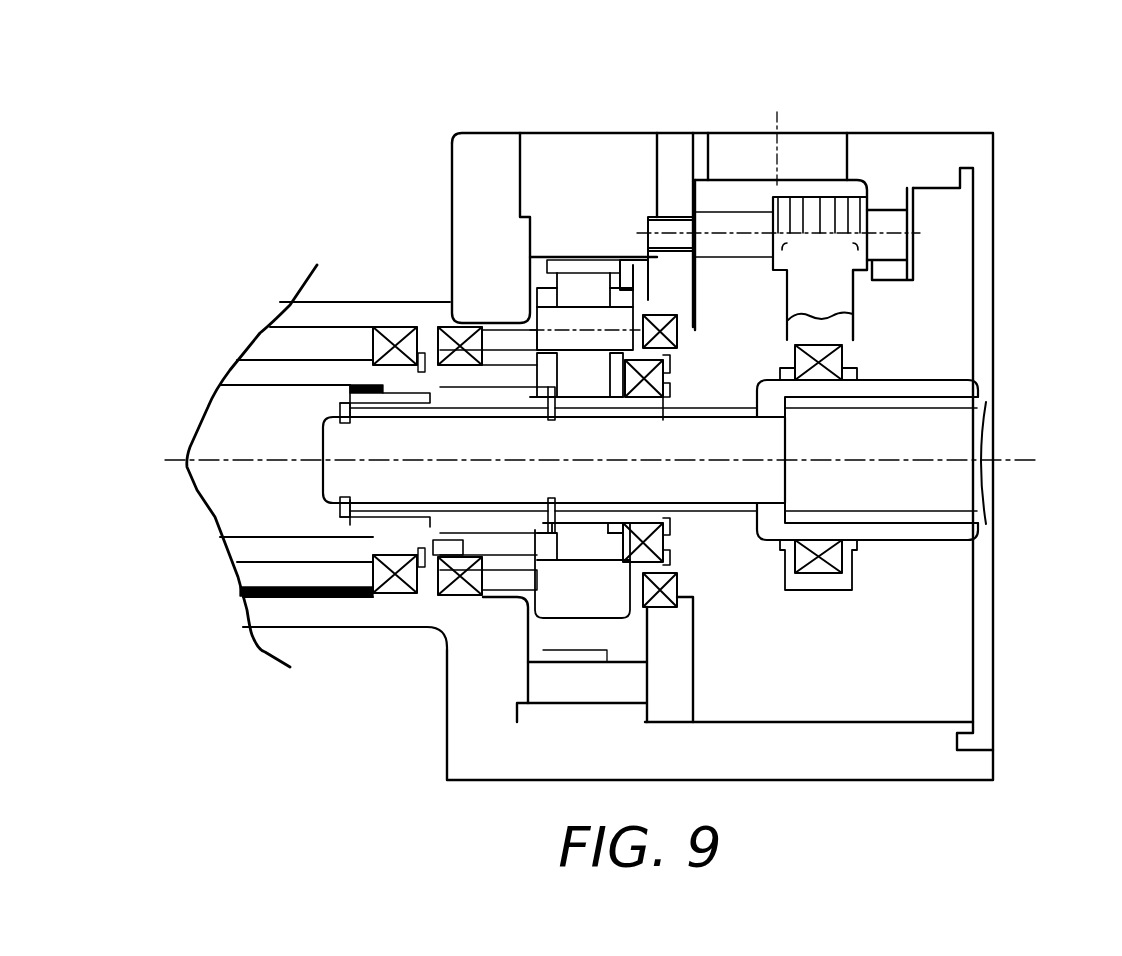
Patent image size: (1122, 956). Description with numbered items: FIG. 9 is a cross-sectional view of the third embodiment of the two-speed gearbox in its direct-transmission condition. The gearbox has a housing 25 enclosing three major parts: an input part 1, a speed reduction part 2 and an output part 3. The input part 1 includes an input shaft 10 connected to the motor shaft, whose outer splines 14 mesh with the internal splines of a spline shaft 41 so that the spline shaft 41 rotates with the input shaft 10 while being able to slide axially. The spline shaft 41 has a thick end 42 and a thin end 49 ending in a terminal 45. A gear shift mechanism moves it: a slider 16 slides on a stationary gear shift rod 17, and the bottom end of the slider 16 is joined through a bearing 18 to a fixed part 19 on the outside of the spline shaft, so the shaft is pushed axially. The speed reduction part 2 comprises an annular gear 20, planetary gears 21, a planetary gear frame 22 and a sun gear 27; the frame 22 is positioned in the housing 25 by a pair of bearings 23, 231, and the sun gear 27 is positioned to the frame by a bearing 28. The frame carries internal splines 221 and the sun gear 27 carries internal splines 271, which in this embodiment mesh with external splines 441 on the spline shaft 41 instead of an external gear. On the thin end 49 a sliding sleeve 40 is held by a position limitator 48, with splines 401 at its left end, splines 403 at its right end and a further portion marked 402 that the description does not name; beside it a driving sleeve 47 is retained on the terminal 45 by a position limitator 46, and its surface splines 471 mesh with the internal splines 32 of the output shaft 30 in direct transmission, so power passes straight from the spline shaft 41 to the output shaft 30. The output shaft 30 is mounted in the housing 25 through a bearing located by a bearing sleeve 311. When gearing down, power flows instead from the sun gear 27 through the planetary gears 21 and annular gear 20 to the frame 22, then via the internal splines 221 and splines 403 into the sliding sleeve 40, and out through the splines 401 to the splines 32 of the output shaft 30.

The input part 1 is at (1005, 292).
The speed reduction part 2 is at (549, 112).
The output part 3 is at (250, 350).
The input shaft 10 is at (968, 493).
The outer splines of the input shaft 14 is at (892, 518).
The slider 16 is at (817, 200).
The stationary gear shift rod 17 is at (728, 215).
The bearing 18 is at (845, 350).
The fixed part 19 is at (860, 372).
The annular gear 20 is at (613, 262).
The planetary gear 21 is at (598, 283).
The planetary gear frame 22 is at (460, 327).
The bearing 23 is at (660, 627).
The housing 25 is at (941, 148).
The sun gear 27 is at (665, 405).
The bearing 28 is at (673, 330).
The output shaft 30 is at (235, 370).
The internal splines of the output shaft 32 is at (350, 385).
The sliding sleeve 40 is at (420, 612).
The spline shaft 41 is at (957, 366).
The thick end 42 is at (967, 392).
The terminal 45 is at (345, 505).
The position limitator 46 is at (385, 520).
The driving sleeve 47 is at (405, 530).
The position limitator 48 is at (677, 597).
The thin end 49 is at (328, 468).
The internal splines of the planetary gear frame 221 is at (375, 330).
The bearing 231 is at (475, 322).
The internal splines of the sun gear 271 is at (590, 420).
The bearing sleeve 311 is at (285, 305).
The splines at the left end of the sliding sleeve 401 is at (400, 592).
The cover portion 402 is at (450, 603).
The splines at the right end of the sliding sleeve 403 is at (480, 612).
The external splines of the spline shaft 441 is at (667, 420).
The splines of the driving sleeve 471 is at (380, 570).